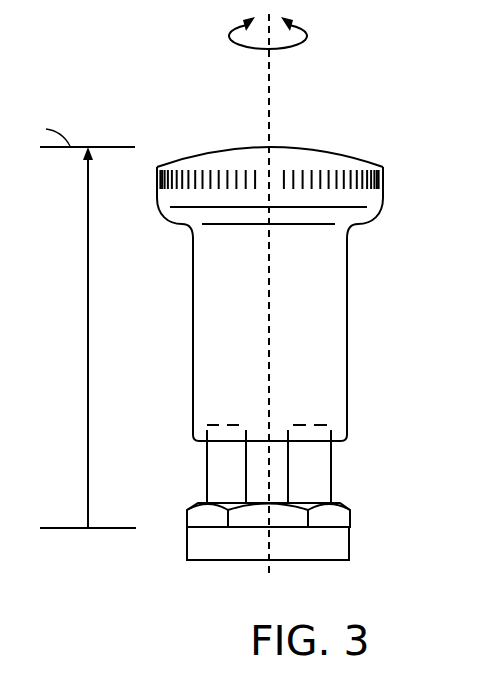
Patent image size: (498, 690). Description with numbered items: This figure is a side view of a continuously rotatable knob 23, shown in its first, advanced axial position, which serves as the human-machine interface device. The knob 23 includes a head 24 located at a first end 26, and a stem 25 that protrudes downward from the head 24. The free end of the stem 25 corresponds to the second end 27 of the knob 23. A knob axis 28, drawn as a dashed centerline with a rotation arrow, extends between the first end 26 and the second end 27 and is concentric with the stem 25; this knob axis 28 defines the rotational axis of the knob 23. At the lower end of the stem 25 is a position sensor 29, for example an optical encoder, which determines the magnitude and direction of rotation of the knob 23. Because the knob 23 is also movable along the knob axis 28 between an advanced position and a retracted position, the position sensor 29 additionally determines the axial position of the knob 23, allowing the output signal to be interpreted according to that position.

The knob 23 is at (173, 100).
The head 24 is at (372, 196).
The stem 25 is at (335, 337).
The first end 26 is at (293, 147).
The second end 27 is at (335, 510).
The knob axis 28 is at (269, 68).
The position sensor 29 is at (340, 545).